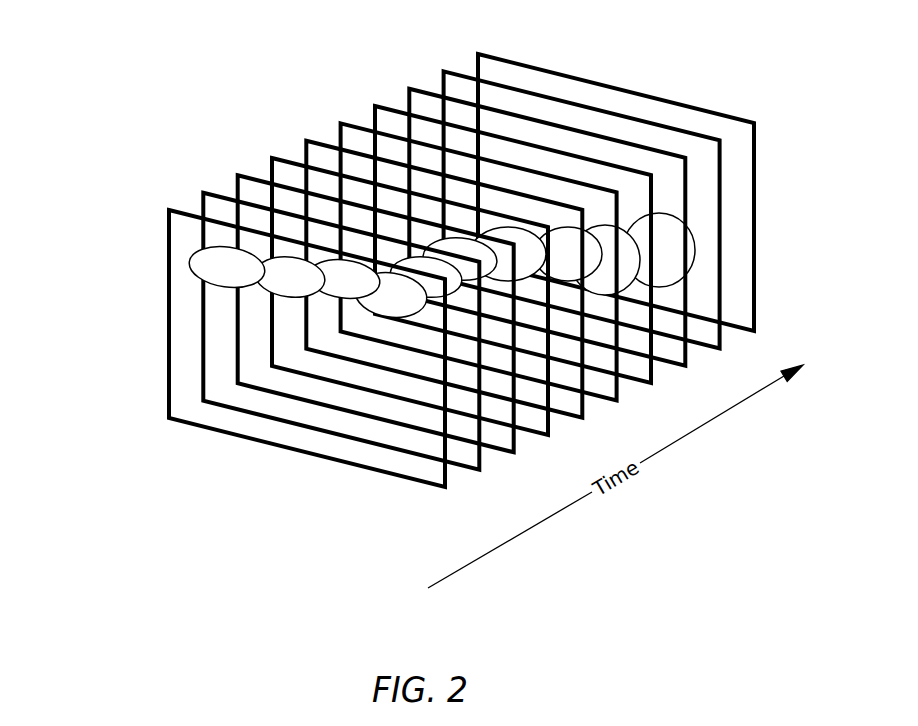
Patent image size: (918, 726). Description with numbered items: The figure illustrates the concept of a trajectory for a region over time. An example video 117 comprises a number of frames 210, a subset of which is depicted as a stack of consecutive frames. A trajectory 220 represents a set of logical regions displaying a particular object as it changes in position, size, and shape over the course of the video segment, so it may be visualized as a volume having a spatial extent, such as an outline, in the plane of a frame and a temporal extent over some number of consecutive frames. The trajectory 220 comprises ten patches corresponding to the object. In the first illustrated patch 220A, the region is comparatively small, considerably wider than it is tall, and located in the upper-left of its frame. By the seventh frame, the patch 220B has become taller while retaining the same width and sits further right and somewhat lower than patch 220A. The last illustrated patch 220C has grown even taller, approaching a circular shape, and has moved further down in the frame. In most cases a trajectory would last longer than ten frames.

The video 117 is at (308, 66).
The frames 210 is at (292, 450).
The trajectory 220 is at (200, 261).
The first illustrated patch 220A is at (227, 268).
The patch in seventh frame 220B is at (506, 242).
The last illustrated patch 220C is at (668, 262).